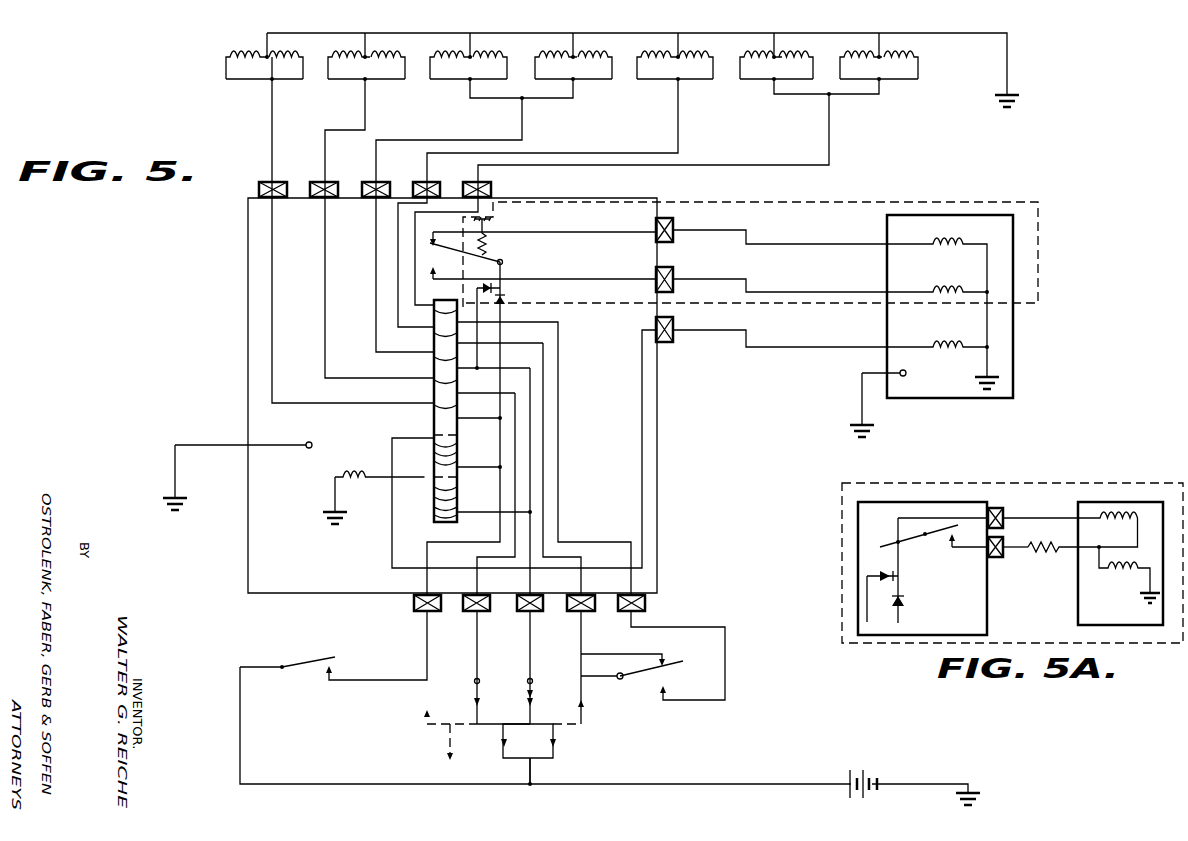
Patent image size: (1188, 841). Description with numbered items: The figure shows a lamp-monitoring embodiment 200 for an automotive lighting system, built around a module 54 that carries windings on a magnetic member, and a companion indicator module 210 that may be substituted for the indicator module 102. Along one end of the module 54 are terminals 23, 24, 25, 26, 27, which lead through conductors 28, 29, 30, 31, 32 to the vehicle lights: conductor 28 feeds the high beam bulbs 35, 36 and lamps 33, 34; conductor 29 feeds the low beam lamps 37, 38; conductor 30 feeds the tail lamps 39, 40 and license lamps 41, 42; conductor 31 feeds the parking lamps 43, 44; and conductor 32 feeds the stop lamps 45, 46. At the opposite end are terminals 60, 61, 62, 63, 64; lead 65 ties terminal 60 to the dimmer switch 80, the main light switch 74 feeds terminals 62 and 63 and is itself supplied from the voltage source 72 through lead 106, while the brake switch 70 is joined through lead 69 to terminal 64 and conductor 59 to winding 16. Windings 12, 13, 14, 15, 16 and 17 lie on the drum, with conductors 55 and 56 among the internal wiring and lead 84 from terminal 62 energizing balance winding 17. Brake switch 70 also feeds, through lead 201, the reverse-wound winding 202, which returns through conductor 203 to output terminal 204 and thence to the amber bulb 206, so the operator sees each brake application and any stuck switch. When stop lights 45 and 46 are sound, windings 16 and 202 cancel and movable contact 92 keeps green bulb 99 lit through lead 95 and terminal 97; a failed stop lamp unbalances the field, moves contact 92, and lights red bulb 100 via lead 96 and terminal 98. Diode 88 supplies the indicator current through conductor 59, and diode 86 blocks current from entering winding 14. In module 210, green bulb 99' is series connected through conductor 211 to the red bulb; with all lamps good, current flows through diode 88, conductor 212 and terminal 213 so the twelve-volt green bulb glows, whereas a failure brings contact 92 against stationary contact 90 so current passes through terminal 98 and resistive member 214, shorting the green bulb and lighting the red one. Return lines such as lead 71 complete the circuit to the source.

In FIG. 5, the winding 12 is at (432, 327).
In FIG. 5, the winding 13 is at (432, 350).
In FIG. 5, the winding 14 is at (432, 375).
In FIG. 5, the winding 15 is at (432, 400).
In FIG. 5, the winding 16 is at (432, 420).
In FIG. 5, the balance winding 17 is at (426, 513).
In FIG. 5, the terminal / lamp 23 is at (471, 181).
In FIG. 5, the terminal 24 is at (419, 181).
In FIG. 5, the terminal 25 is at (368, 181).
In FIG. 5, the terminal 26 is at (321, 181).
In FIG. 5, the terminal 27 is at (262, 180).
In FIG. 5, the conductor 28 is at (829, 122).
In FIG. 5, the conductor 29 is at (683, 118).
In FIG. 5, the conductor 30 is at (522, 118).
In FIG. 5, the conductor 31 is at (365, 105).
In FIG. 5, the conductor 32 is at (272, 105).
In FIG. 5, the lamp 33 is at (765, 58).
In FIG. 5, the lamp 34 is at (814, 58).
In FIG. 5, the bulb 35 is at (864, 58).
In FIG. 5, the bulb 36 is at (918, 58).
In FIG. 5, the lamp 37 is at (712, 58).
In FIG. 5, the lamp 38 is at (662, 58).
In FIG. 5, the lamp 39 is at (608, 58).
In FIG. 5, the lamp 40 is at (558, 58).
In FIG. 5, the lamp 41 is at (505, 58).
In FIG. 5, the lamp 42 is at (454, 58).
In FIG. 5, the lamp 43 is at (406, 58).
In FIG. 5, the lamp 44 is at (351, 58).
In FIG. 5, the lamp 45 is at (305, 58).
In FIG. 5, the lamp 46 is at (238, 58).
In FIG. 5, the module 54 is at (248, 300).
In FIG. 5, the conductor 55 is at (559, 376).
In FIG. 5, the conductor 56 is at (563, 399).
In FIG. 5, the conductor 59 is at (501, 489).
In FIG. 5, the terminal 60 is at (631, 618).
In FIG. 5, the terminal 61 is at (577, 618).
In FIG. 5, the terminal 62 is at (526, 620).
In FIG. 5, the terminal 63 is at (475, 620).
In FIG. 5, the terminal 64 is at (411, 608).
In FIG. 5, the lead 65 is at (674, 642).
In FIG. 5, the lead 69 is at (422, 651).
In FIG. 5, the brake switch 70 is at (362, 640).
In FIG. 5, the conductor 71 is at (359, 784).
In FIG. 5, the voltage source 72 is at (865, 782).
In FIG. 5, the main light switch 74 is at (564, 753).
In FIG. 5, the dimmer switch 80 is at (655, 679).
In FIG. 5, the lead 84 is at (470, 515).
In FIG. 5, the diode 86 is at (491, 260).
In FIG. 5, the diode 88 is at (508, 301).
In FIG. 5A, the diode 88 is at (921, 604).
In FIG. 5A, the stationary contact 90 is at (943, 550).
In FIG. 5A, the movable contact 92 is at (933, 533).
In FIG. 5, the lead 95 is at (600, 238).
In FIG. 5, the lead 96 is at (612, 284).
In FIG. 5, the terminal 97 is at (676, 240).
In FIG. 5, the terminal 98 is at (676, 288).
In FIG. 5A, the terminal 98 is at (999, 558).
In FIG. 5, the green bulb 99 is at (928, 240).
In FIG. 5A, the green bulb 99' is at (1120, 563).
In FIG. 5, the red bulb 100 is at (948, 287).
In FIG. 5A, the red bulb 100 is at (1114, 586).
In FIG. 5, the module 102 is at (883, 327).
In FIG. 5, the lead 106 is at (532, 772).
In FIG. 5, the embodiment 200 is at (145, 350).
In FIG. 5, the lead 201 is at (485, 473).
In FIG. 5, the winding 202 is at (432, 493).
In FIG. 5, the conductor 203 is at (392, 541).
In FIG. 5, the output terminal 204 is at (665, 344).
In FIG. 5, the amber bulb 206 is at (952, 355).
In FIG. 5A, the module 210 is at (1143, 484).
In FIG. 5A, the conductor 211 is at (1109, 552).
In FIG. 5A, the conductor 212 is at (941, 519).
In FIG. 5A, the terminal 213 is at (1004, 516).
In FIG. 5A, the resistive member 214 is at (1038, 556).